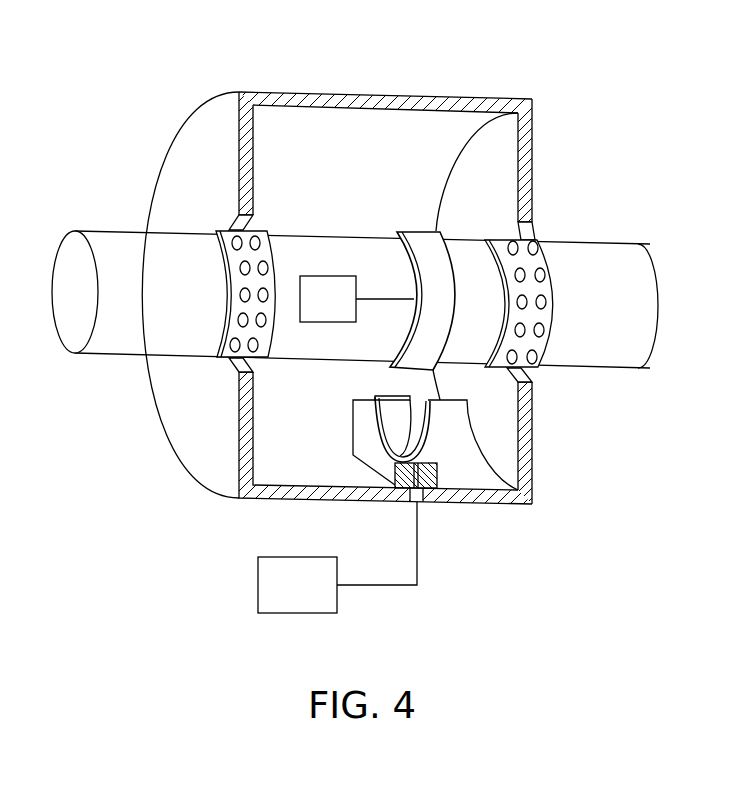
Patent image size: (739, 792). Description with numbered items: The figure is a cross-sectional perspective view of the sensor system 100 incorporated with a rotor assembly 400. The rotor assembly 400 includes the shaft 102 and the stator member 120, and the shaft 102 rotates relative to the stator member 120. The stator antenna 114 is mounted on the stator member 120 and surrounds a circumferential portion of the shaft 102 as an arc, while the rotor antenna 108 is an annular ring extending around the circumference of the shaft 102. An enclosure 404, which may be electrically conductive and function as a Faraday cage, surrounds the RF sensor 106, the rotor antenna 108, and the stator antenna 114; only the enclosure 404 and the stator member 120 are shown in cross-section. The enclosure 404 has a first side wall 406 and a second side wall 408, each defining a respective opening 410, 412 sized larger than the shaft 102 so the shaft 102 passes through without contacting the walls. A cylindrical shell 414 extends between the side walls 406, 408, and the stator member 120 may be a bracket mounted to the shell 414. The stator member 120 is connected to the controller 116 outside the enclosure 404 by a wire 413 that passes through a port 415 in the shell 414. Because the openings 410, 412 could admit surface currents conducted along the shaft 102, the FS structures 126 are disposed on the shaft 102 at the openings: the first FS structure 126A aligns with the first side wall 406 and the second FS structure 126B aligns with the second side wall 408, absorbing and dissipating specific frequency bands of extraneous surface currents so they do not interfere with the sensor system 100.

The sensor system 100 is at (474, 66).
The shaft 102 is at (110, 242).
The RF sensor 106 is at (328, 276).
The rotor antenna 108 is at (425, 237).
The stator antenna 114 is at (438, 442).
The controller 116 is at (279, 596).
The stator member 120 is at (365, 442).
The FS structures 126 is at (343, 287).
The first FS structure 126A is at (242, 308).
The second FS structure 126B is at (548, 292).
The rotor assembly 400 is at (310, 435).
The enclosure 404 is at (192, 128).
The first side wall 406 is at (197, 479).
The second side wall 408 is at (533, 458).
The opening 410 is at (229, 369).
The opening 412 is at (541, 378).
The wire 413 is at (388, 587).
The cylindrical shell 414 is at (328, 100).
The port 415 is at (429, 519).